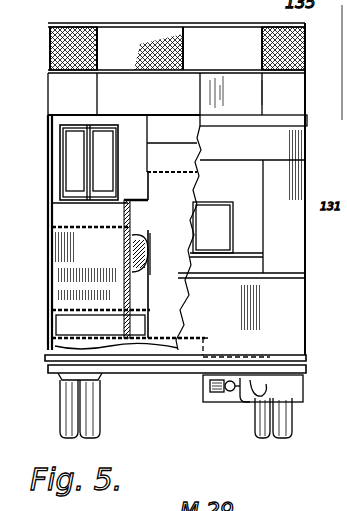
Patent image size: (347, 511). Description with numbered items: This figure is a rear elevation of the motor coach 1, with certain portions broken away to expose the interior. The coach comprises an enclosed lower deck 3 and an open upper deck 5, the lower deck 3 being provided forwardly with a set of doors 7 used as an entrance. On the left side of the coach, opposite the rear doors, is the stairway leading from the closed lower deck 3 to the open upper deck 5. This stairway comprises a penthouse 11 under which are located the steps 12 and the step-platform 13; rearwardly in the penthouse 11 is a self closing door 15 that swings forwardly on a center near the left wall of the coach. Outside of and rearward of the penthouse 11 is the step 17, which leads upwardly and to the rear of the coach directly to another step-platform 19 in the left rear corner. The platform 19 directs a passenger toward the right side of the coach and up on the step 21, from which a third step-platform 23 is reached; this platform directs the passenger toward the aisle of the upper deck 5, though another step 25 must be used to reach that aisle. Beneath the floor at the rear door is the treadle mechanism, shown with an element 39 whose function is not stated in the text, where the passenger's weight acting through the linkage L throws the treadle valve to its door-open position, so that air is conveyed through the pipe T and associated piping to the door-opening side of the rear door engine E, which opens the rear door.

The motor coach 1 is at (306, 285).
The lower deck 3 is at (169, 257).
The upper deck 5 is at (207, 51).
The set of doors 7 is at (329, 135).
The penthouse 11 is at (137, 130).
The steps 12 is at (150, 310).
The step-platform 13 is at (100, 283).
The self closing door 15 is at (80, 120).
The step 17 is at (100, 252).
The step-platform 19 is at (68, 226).
The step 21 is at (138, 199).
The step-platform 23 is at (175, 173).
The step 25 is at (176, 126).
The bolt 39 is at (240, 398).
The pipe T is at (233, 357).
The linkage L is at (244, 400).
The door engine E is at (252, 400).